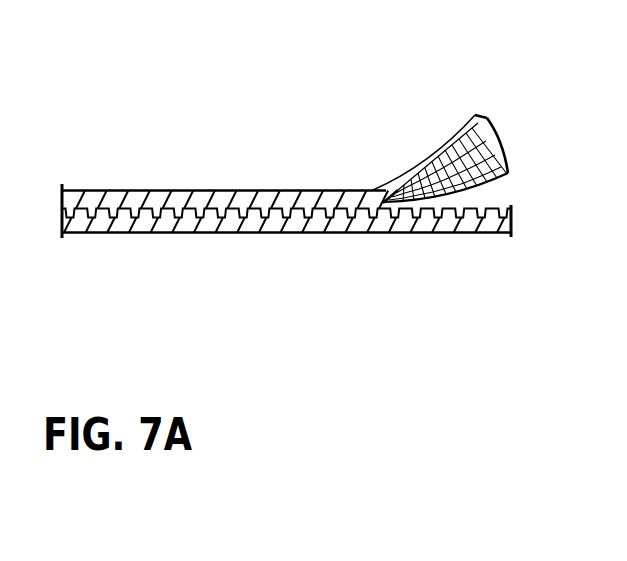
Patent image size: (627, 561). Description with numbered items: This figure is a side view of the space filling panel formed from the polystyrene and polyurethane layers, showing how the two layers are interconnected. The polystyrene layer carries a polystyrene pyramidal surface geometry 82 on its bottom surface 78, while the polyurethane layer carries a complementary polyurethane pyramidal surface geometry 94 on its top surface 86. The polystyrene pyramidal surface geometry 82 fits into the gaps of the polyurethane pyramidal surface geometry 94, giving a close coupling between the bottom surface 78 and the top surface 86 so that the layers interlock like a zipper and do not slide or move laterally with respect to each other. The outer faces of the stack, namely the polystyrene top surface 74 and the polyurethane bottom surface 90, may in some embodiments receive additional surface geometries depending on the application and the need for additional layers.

The polystyrene top surface 74 is at (315, 189).
The bottom surface 78 is at (510, 158).
The polystyrene pyramidal surface geometry 82 is at (512, 160).
The top surface 86 is at (490, 211).
The polyurethane bottom surface 90 is at (408, 234).
The polyurethane pyramidal surface geometry 94 is at (472, 200).